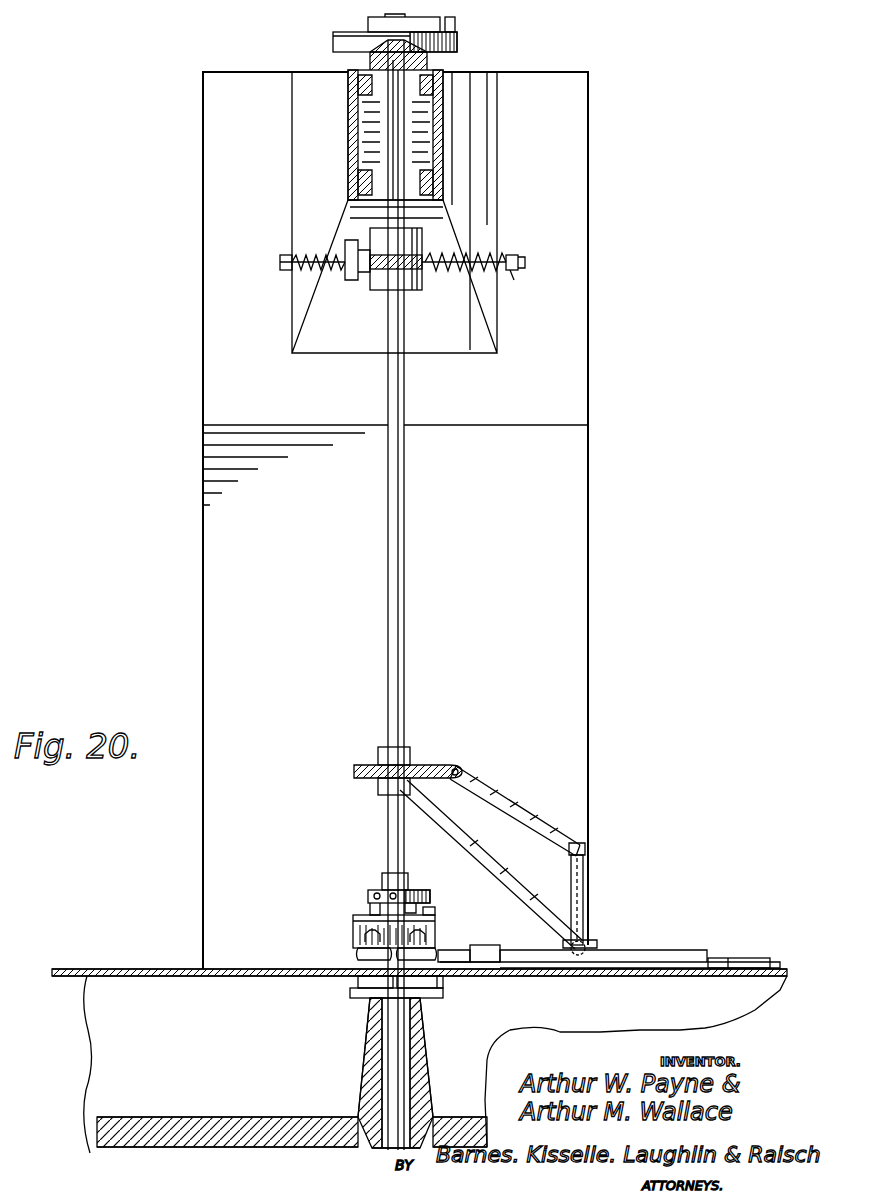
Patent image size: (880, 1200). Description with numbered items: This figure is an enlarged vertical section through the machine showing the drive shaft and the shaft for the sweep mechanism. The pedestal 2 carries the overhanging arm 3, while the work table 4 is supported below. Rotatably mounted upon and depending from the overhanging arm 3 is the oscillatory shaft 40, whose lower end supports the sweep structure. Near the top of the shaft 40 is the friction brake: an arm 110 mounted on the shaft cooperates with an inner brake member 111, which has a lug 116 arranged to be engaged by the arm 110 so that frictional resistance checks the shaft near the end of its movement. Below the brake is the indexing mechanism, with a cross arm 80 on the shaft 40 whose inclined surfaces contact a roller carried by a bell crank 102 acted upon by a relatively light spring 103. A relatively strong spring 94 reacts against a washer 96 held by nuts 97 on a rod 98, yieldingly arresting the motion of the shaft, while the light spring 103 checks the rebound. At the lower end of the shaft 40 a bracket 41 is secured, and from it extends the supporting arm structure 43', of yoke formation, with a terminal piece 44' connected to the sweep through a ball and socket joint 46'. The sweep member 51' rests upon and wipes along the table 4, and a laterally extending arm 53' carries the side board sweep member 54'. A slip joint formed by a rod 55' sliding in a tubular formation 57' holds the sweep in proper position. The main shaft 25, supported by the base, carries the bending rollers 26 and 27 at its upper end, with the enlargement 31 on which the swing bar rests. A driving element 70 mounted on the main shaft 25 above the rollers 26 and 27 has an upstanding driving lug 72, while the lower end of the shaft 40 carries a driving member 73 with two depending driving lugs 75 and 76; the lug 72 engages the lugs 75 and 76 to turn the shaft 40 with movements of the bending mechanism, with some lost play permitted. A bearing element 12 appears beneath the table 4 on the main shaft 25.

The pedestal 2 is at (586, 103).
The overhanging arm 3 is at (348, 100).
The work table 4 is at (126, 968).
The bearing 12 is at (355, 982).
The main shaft 25 is at (388, 1092).
The bending roller 26 is at (443, 984).
The bending roller 27 is at (355, 958).
The enlargement 31 is at (360, 998).
The oscillatory shaft 40 is at (406, 382).
The bracket 41 is at (432, 766).
The supporting arm structure 43' is at (491, 857).
The terminal piece 44' is at (607, 894).
The ball and socket joint 46' is at (603, 936).
The sweep member 51' is at (490, 984).
The laterally extending arm 53' is at (640, 944).
The side board sweep member 54' is at (740, 944).
The rod 55' is at (459, 941).
The tubular formation 57' is at (501, 941).
The driving element 70 is at (353, 934).
The driving lug 72 is at (436, 911).
The driving member 73 is at (368, 892).
The driving lug 75 is at (412, 892).
The driving lug 76 is at (368, 906).
The cross arm 80 is at (396, 259).
The spring 94 is at (490, 250).
The washer 96 is at (508, 257).
The nuts 97 is at (514, 275).
The rod 98 is at (526, 264).
The bell crank 102 is at (358, 272).
The spring 103 is at (290, 258).
The arm 110 is at (368, 25).
The inner brake member 111 is at (440, 52).
The lug 116 is at (458, 23).